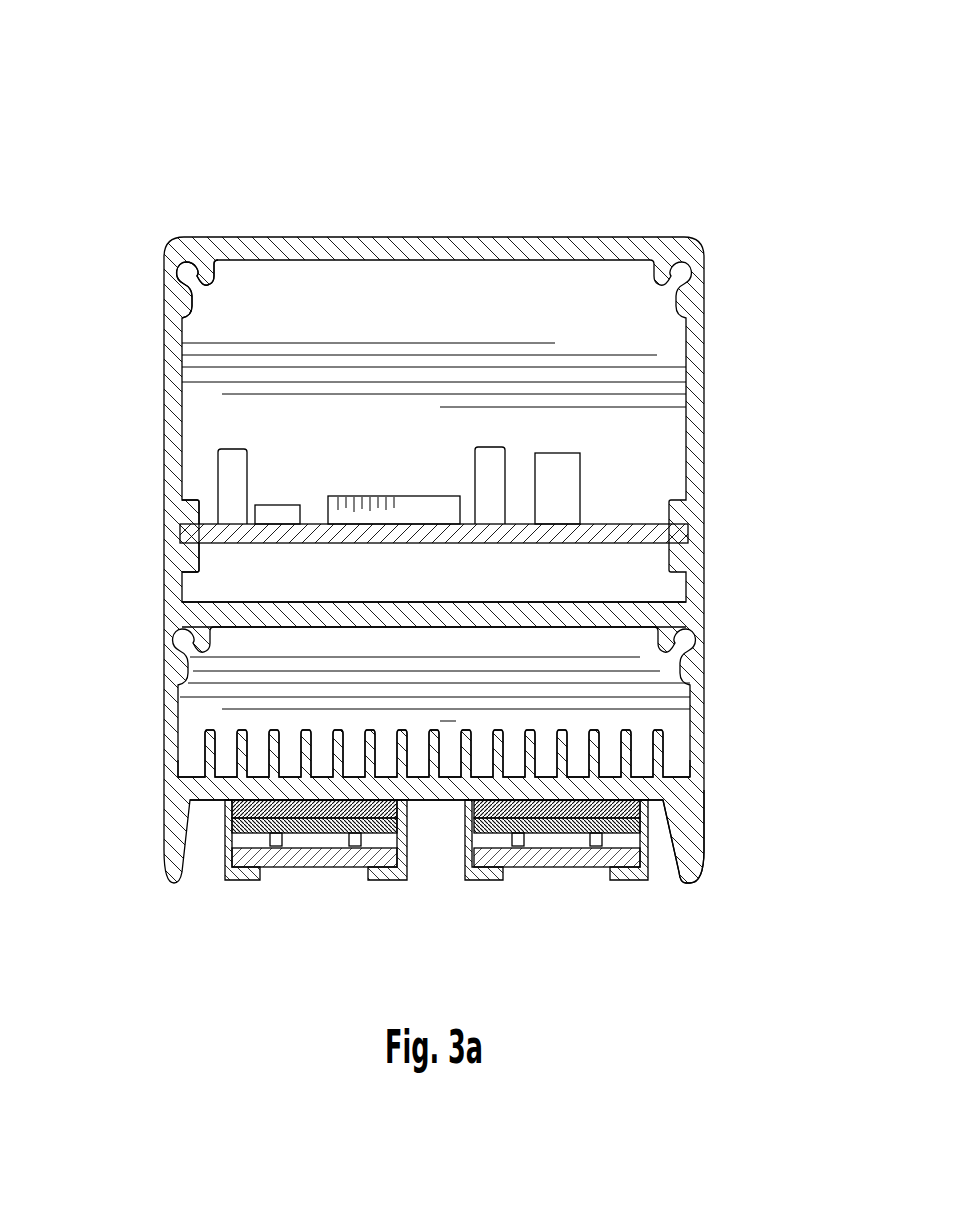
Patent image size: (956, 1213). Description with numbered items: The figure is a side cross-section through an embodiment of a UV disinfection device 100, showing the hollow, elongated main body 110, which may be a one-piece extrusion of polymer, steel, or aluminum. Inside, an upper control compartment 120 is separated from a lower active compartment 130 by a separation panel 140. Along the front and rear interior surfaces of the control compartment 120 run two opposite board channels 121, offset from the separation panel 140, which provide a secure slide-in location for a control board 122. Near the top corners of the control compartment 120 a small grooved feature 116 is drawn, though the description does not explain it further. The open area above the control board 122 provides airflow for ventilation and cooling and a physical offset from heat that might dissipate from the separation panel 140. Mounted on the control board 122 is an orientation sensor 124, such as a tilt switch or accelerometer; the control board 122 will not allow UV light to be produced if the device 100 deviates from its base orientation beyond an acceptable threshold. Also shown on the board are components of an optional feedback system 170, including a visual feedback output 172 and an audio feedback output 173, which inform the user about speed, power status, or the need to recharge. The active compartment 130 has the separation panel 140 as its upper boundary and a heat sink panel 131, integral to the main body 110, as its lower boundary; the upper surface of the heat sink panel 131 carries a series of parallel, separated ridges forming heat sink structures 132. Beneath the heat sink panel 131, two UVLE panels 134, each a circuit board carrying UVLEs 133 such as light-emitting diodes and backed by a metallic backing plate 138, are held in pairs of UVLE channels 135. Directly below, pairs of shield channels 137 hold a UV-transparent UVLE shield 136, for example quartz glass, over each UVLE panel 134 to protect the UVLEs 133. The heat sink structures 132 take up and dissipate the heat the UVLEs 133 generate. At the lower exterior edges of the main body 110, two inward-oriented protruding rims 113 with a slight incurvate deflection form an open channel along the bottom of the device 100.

The UV disinfection device 100 is at (436, 496).
The main body 110 is at (343, 240).
The protruding rims 113 is at (690, 815).
The retaining groove 116 is at (187, 272).
The control compartment 120 is at (520, 315).
The board channels 121 is at (182, 522).
The control board 122 is at (672, 530).
The orientation sensor 124 is at (266, 505).
The active compartment 130 is at (648, 692).
The heat sink panel 131 is at (193, 777).
The heat sink structures 132 is at (208, 750).
The UVLE 133 is at (523, 840).
The UVLE panel 134 is at (635, 835).
The UVLE channels 135 is at (232, 832).
The UVLE shield 136 is at (578, 864).
The shield channels 137 is at (397, 870).
The metallic backing plate 138 is at (480, 808).
The separation panel 140 is at (624, 607).
The feedback system 170 is at (478, 435).
The visual feedback output 172 is at (583, 500).
The audio feedback output 173 is at (347, 497).